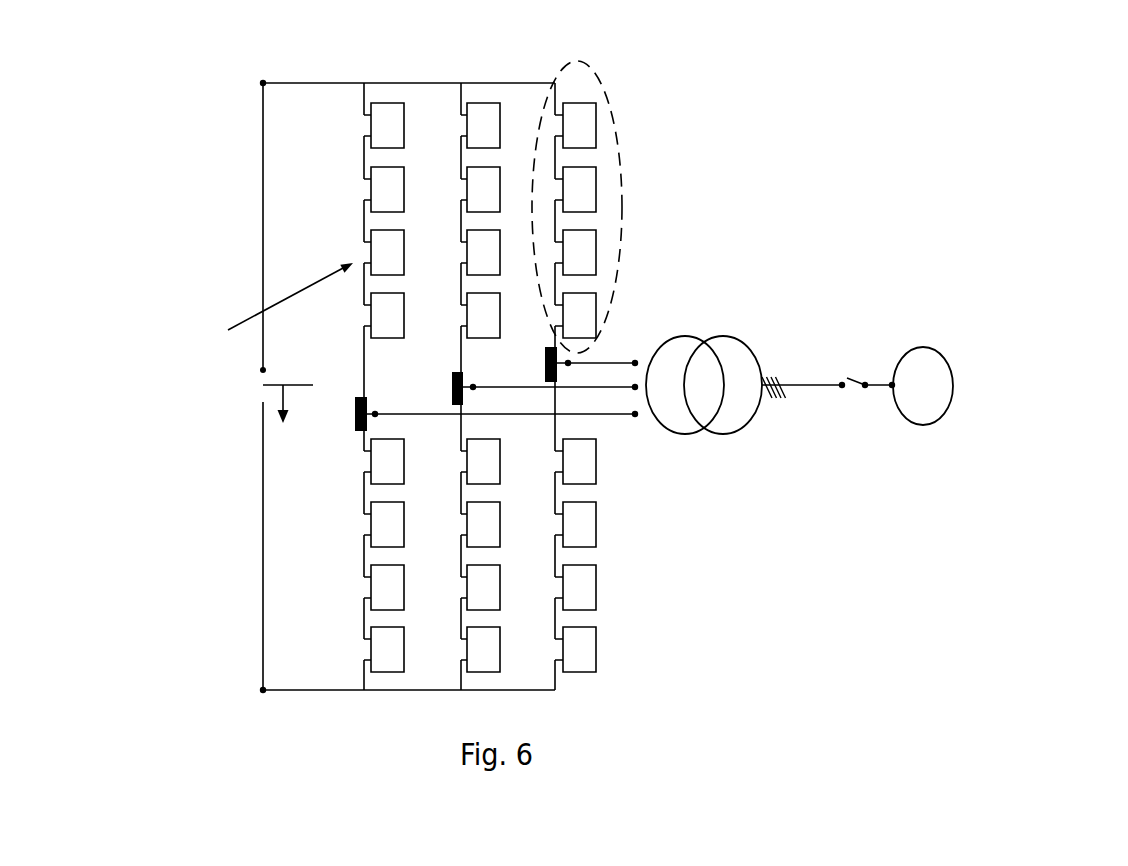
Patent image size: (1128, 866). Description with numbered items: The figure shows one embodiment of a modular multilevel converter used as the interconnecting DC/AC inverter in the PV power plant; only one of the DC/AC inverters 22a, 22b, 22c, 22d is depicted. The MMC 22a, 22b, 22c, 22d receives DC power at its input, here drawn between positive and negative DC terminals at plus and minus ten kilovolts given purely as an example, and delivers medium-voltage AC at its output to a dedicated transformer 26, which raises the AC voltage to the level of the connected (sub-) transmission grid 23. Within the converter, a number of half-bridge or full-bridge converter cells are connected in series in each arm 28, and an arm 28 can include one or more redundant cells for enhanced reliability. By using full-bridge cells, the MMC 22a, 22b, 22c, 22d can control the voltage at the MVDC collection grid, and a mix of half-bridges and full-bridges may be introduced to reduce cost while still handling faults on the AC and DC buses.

The DC/AC inverter 22a is at (830, 40).
The DC/AC inverter 22b is at (545, 386).
The DC/AC inverter 22c is at (591, 386).
The DC/AC inverter 22d is at (373, 393).
The transmission grid 23 is at (935, 360).
The transformer 26 is at (720, 445).
The arm 28 is at (623, 179).